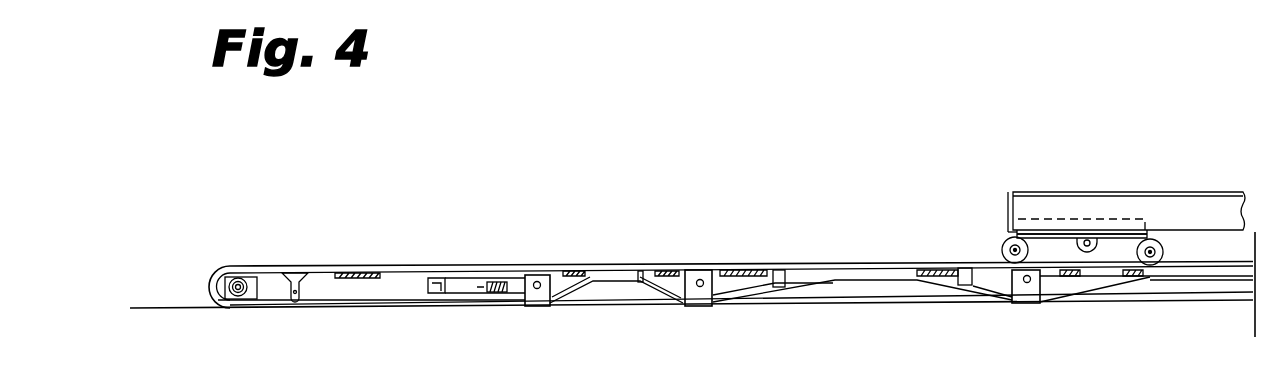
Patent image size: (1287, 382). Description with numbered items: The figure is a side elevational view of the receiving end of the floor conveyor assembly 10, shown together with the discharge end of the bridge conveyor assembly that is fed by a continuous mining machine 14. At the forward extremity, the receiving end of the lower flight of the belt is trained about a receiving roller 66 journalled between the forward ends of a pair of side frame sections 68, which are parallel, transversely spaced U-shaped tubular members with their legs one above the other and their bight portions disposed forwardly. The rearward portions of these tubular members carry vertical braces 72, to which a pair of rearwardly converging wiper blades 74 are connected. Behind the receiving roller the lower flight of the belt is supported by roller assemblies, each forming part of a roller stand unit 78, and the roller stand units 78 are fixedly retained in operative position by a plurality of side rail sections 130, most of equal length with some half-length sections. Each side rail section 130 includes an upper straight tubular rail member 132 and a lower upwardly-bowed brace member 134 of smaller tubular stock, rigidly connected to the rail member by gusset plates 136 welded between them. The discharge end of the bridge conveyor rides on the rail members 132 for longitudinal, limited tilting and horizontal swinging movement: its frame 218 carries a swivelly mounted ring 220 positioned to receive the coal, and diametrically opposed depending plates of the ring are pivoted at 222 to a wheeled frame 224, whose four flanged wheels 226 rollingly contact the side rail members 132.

The floor conveyor assembly 10 is at (190, 256).
The continuous mining machine 14 is at (1097, 172).
The receiving roller 66 is at (212, 283).
The side frame sections 68 is at (292, 272).
The vertical braces 72 is at (430, 278).
The wiper blades 74 is at (485, 290).
The roller stand unit 78 is at (542, 311).
The side rail section 130 is at (648, 238).
The upper straight tubular rail member 132 is at (773, 268).
The lower upwardly-bowed brace member 134 is at (583, 290).
The gusset plates 136 is at (620, 276).
The frame 218 is at (1148, 191).
The ring 220 is at (1057, 219).
The pivot 222 is at (1088, 238).
The wheeled frame 224 is at (1062, 242).
The flanged wheels 226 is at (1004, 246).